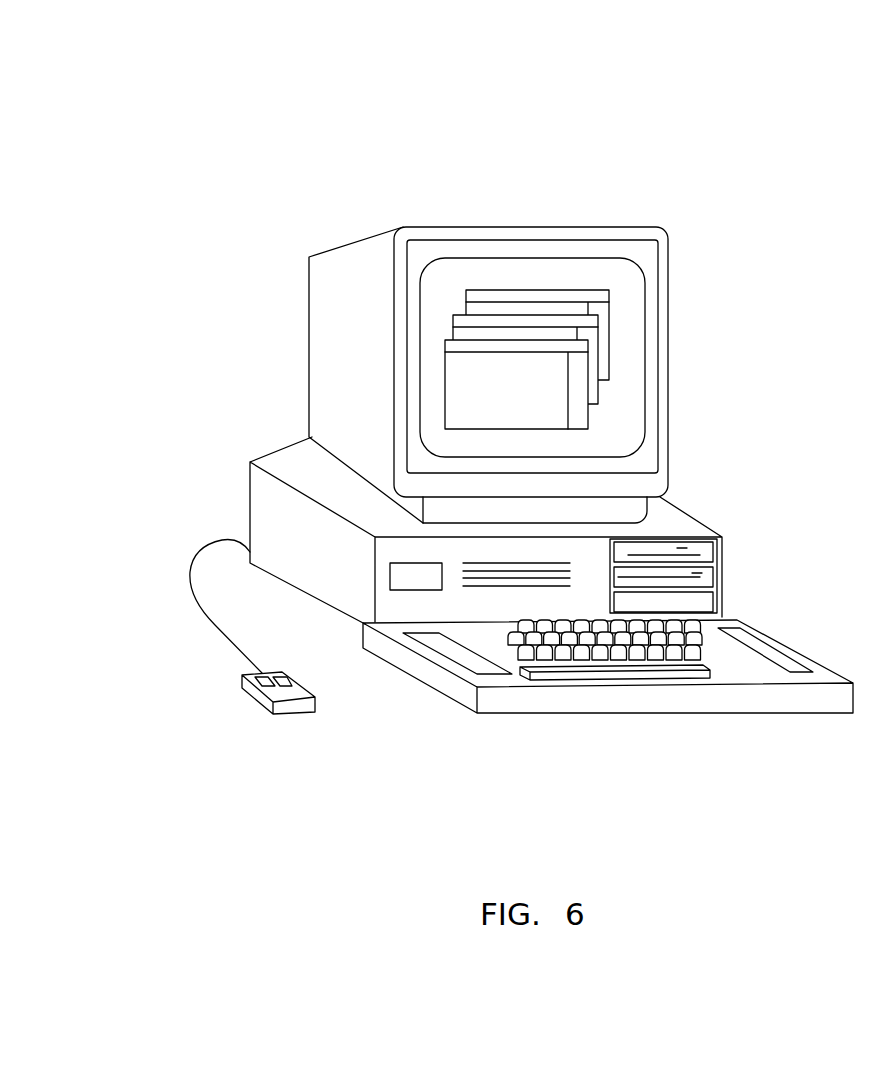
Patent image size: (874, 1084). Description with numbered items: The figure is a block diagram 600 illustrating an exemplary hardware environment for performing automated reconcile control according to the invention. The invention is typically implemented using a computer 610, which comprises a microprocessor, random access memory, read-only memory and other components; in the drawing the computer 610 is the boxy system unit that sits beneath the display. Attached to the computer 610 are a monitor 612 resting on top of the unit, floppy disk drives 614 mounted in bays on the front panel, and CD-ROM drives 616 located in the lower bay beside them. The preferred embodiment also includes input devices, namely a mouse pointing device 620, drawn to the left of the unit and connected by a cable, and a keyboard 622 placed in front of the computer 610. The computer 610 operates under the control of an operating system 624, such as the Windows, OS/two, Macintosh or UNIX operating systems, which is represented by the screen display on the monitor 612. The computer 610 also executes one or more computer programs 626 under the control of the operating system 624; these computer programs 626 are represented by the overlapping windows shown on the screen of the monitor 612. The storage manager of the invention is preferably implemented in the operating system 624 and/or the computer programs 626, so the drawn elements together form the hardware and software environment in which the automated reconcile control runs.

The block diagram 600 is at (688, 173).
The computer 610 is at (690, 513).
The monitor 612 is at (558, 227).
The floppy disk drives 614 is at (703, 575).
The CD-ROM drives 616 is at (705, 603).
The mouse pointing device 620 is at (242, 693).
The keyboard 622 is at (780, 699).
The operating system 624 is at (447, 278).
The computer programs 626 is at (634, 368).